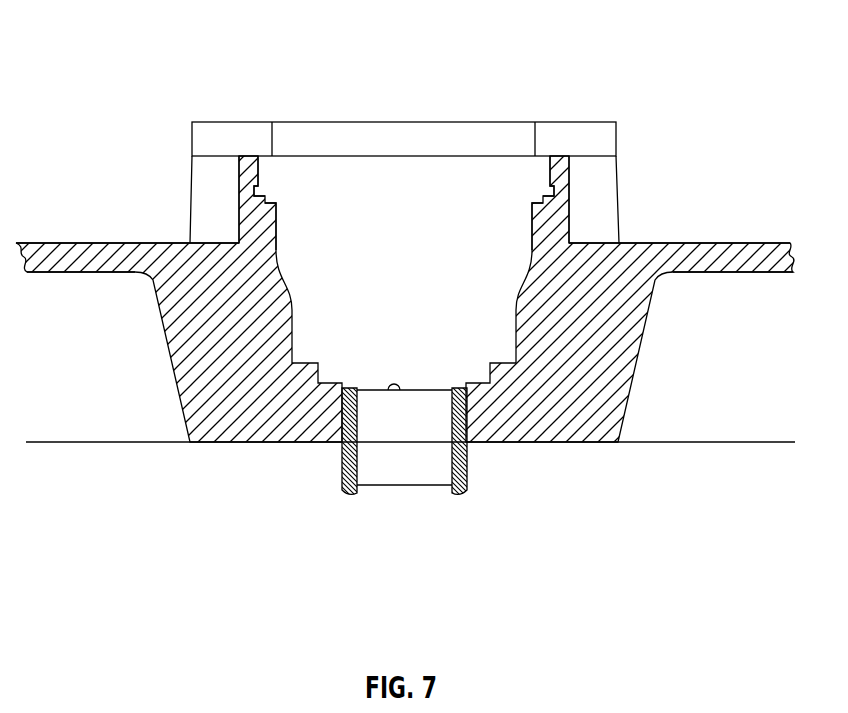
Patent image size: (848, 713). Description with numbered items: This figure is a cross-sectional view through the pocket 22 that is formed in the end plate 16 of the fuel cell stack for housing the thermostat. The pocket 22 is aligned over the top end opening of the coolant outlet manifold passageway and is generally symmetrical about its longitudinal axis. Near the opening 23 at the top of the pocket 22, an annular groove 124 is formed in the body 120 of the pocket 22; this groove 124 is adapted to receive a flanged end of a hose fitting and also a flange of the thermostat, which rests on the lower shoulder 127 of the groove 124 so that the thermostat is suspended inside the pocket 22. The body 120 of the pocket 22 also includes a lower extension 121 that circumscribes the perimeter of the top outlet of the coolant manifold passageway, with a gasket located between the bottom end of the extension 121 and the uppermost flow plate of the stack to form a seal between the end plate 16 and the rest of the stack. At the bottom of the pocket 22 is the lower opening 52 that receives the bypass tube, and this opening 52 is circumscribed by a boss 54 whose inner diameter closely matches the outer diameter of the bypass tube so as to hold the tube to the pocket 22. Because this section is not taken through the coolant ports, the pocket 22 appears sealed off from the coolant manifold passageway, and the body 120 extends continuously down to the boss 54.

The end plate 16 is at (758, 248).
The pocket 22 is at (505, 101).
The opening 23 is at (427, 177).
The annular groove 124 is at (262, 157).
The lower shoulder 127 is at (552, 202).
The body 120 is at (192, 385).
The lower extension 121 is at (195, 417).
The lower opening 52 is at (393, 383).
The boss 54 is at (460, 493).